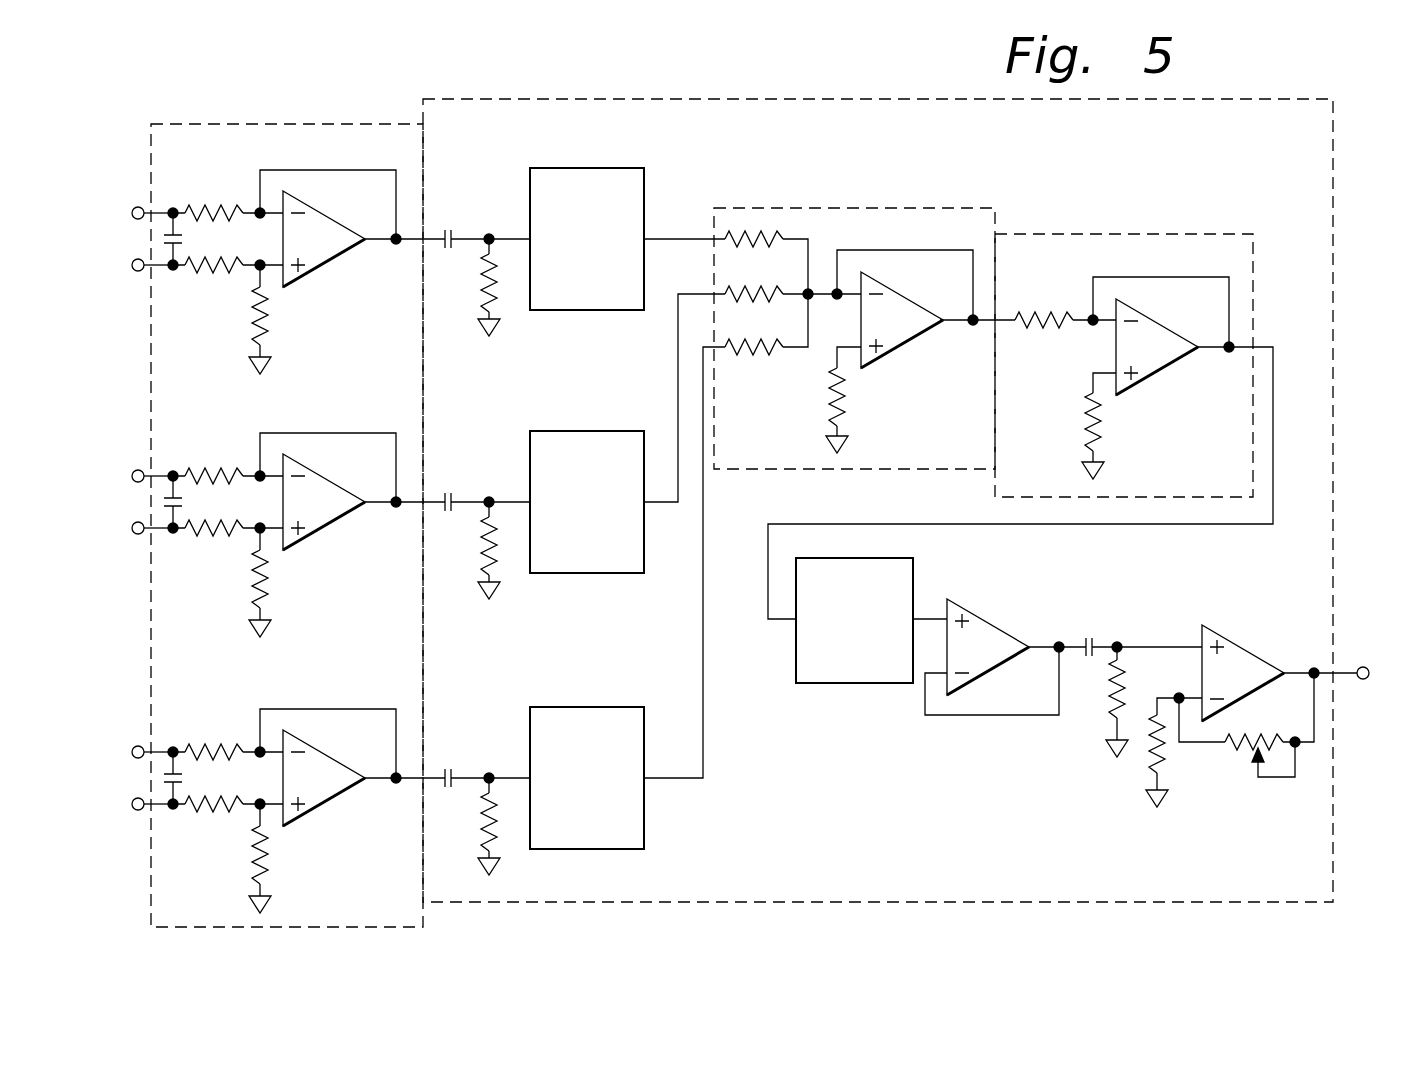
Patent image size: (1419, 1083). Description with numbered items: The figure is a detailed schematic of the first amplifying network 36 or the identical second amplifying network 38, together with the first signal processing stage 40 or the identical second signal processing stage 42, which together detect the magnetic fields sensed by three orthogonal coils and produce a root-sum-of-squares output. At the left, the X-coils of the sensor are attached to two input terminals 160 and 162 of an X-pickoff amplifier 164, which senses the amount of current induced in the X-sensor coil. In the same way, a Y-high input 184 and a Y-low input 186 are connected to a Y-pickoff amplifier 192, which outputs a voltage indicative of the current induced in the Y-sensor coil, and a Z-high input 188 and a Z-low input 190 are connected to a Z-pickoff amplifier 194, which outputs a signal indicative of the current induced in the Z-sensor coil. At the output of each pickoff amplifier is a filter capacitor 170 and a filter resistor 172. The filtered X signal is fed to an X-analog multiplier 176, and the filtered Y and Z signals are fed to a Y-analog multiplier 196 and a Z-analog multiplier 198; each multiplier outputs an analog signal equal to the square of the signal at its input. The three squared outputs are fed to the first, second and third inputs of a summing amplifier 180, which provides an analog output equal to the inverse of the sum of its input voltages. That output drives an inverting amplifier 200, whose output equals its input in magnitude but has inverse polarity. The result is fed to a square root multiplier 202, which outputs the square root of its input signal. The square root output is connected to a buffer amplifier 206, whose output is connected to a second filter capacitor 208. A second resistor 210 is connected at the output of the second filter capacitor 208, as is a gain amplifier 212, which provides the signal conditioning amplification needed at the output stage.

The first amplifying network 36 is at (287, 495).
The second amplifying network 38 is at (287, 123).
The first signal processing stage 40 is at (878, 475).
The second signal processing stage 42 is at (550, 99).
The input terminal 160 is at (114, 206).
The input terminal 162 is at (117, 269).
The X-pickoff amplifier 164 is at (304, 272).
The filter capacitor 170 is at (452, 228).
The filter resistor 172 is at (481, 278).
The X-analog multiplier 176 is at (617, 222).
The summing amplifier 180 is at (948, 208).
The Y-high input 184 is at (114, 470).
The Y-low input 186 is at (117, 531).
The Z-high input 188 is at (114, 745).
The Z-low input 190 is at (117, 809).
The Y-pickoff amplifier 192 is at (304, 535).
The Z-pickoff amplifier 194 is at (304, 811).
The Y-analog multiplier 196 is at (617, 433).
The Z-analog multiplier 198 is at (617, 598).
The inverting amplifier 200 is at (1135, 234).
The square root multiplier 202 is at (913, 562).
The buffer amplifier 206 is at (1005, 630).
The second filter capacitor 208 is at (1093, 635).
The second resistor 210 is at (1108, 705).
The gain amplifier 212 is at (1232, 640).